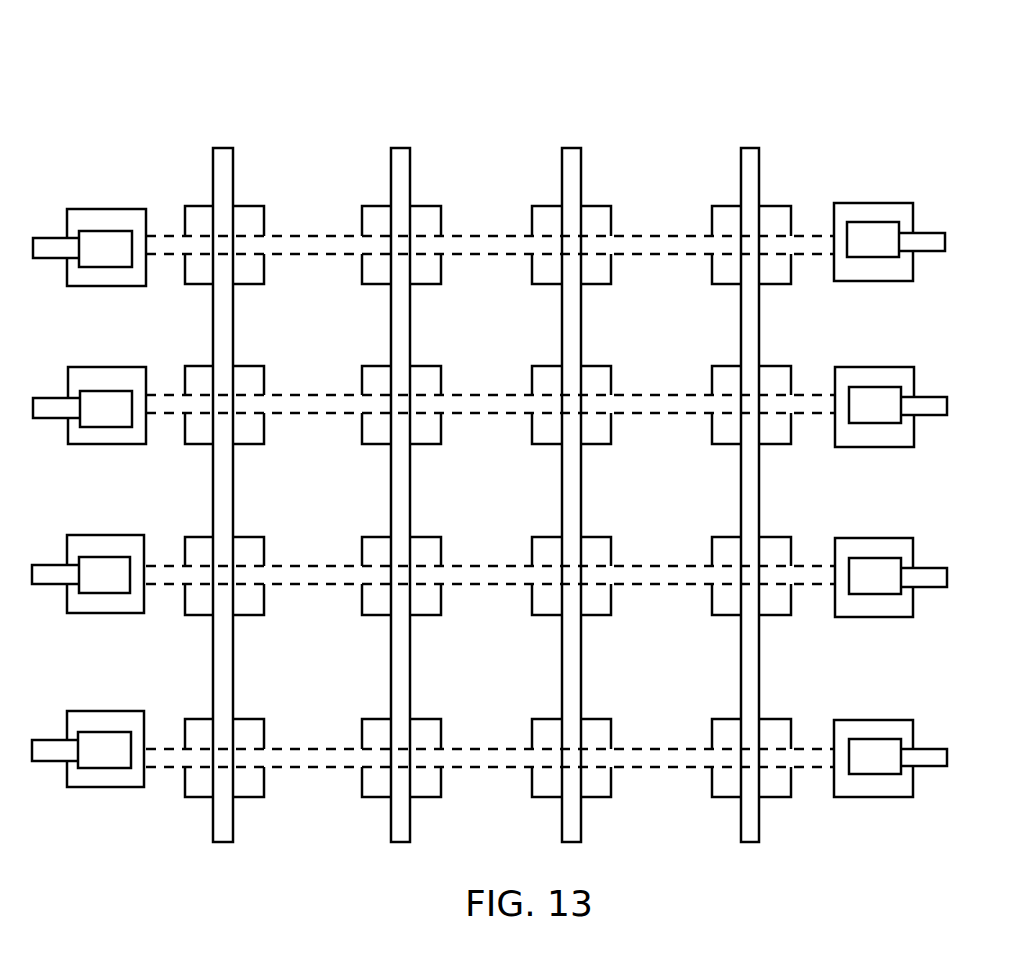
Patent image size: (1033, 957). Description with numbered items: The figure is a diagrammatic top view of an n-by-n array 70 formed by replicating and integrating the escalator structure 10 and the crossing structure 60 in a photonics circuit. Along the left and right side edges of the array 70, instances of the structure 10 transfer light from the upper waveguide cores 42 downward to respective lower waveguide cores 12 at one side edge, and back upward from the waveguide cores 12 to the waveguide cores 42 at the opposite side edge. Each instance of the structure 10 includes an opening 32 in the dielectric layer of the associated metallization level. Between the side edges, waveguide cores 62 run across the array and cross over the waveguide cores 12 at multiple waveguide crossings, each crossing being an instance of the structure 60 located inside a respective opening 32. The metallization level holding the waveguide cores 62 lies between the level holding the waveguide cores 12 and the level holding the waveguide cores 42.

The structure for a waveguide escalator 10 is at (870, 292).
The waveguide core 12 is at (495, 245).
The opening 32 is at (107, 210).
The waveguide core 42 is at (933, 240).
The structure for a waveguide crossing 60 is at (362, 187).
The waveguide core 62 is at (752, 485).
The n-by-n array 70 is at (132, 90).